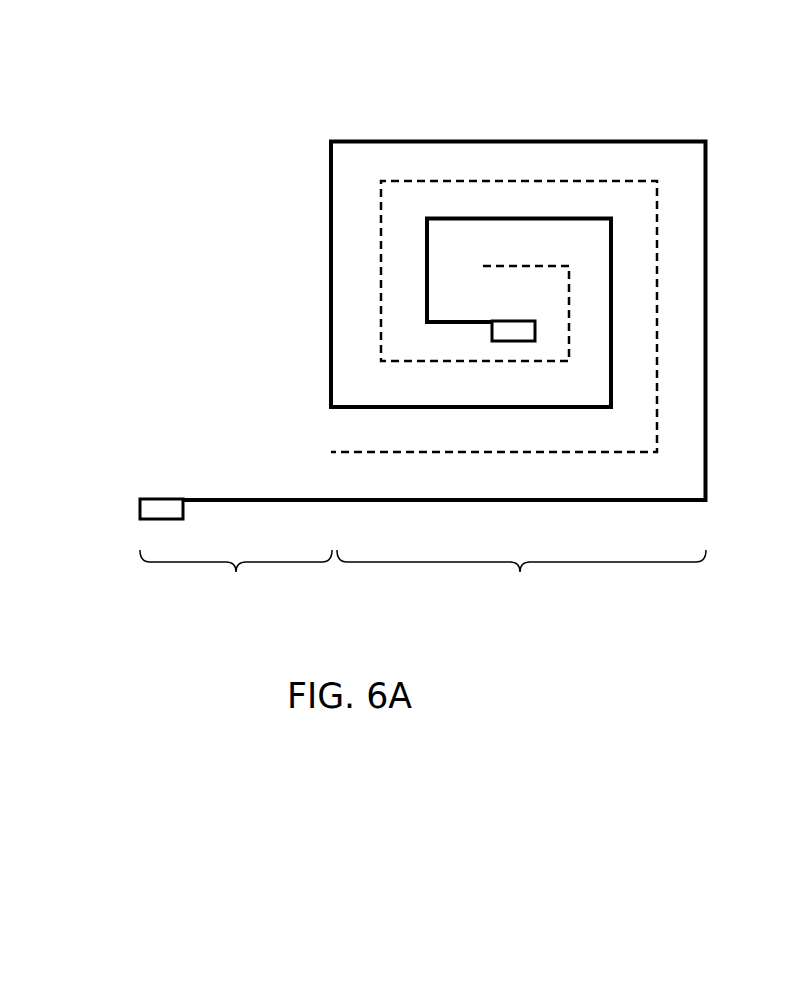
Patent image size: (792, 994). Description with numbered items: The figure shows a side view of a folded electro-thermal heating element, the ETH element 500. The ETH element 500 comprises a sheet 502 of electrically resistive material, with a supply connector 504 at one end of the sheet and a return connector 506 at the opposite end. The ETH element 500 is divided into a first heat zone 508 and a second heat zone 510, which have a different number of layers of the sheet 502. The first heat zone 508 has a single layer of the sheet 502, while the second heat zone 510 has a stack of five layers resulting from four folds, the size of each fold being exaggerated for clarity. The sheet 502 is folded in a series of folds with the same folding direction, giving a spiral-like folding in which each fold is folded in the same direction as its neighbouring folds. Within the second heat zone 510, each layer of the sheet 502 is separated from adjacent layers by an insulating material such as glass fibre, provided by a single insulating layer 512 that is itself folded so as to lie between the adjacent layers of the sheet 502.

The ETH element 500 is at (583, 78).
The sheet 502 is at (438, 140).
The supply connector 504 is at (167, 509).
The return connector 506 is at (512, 330).
The first heat zone 508 is at (236, 581).
The second heat zone 510 is at (521, 581).
The insulating layer 512 is at (379, 205).